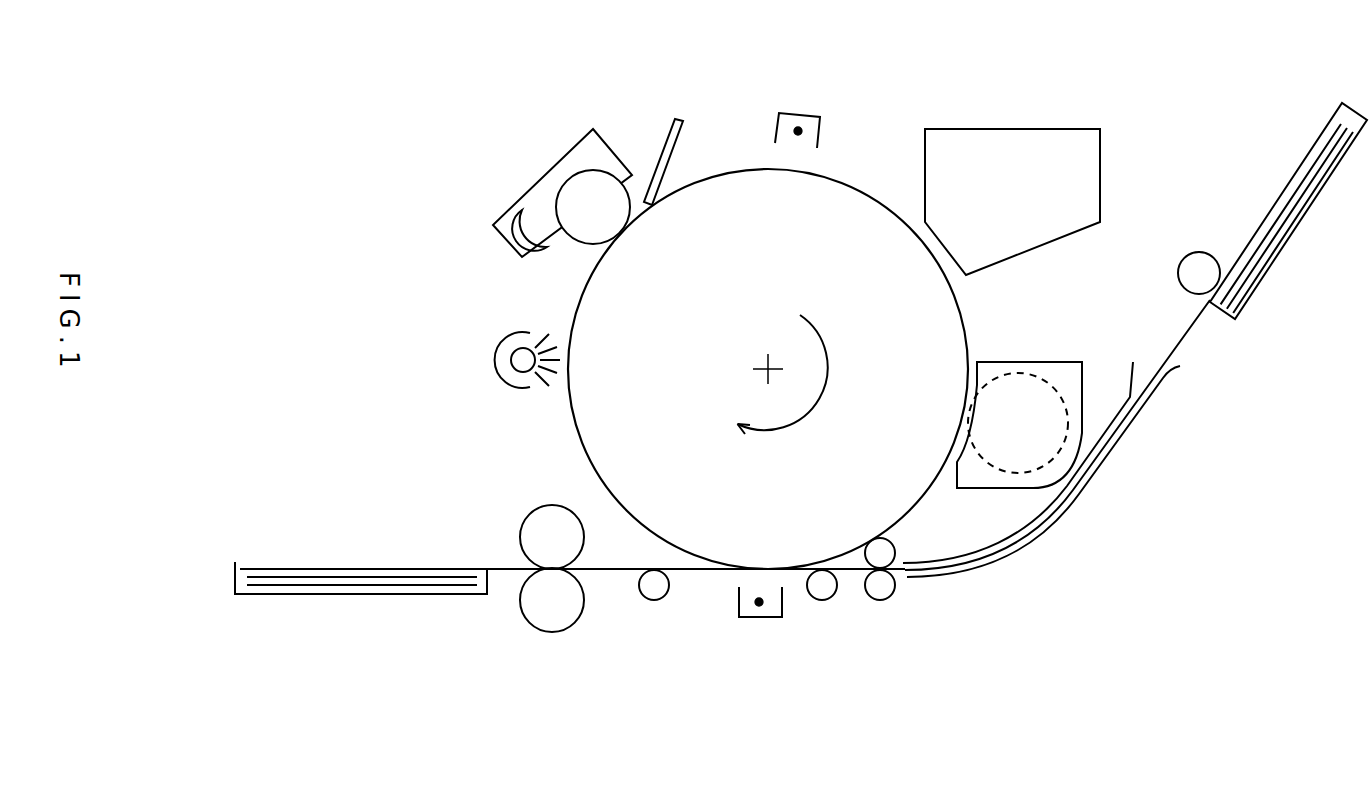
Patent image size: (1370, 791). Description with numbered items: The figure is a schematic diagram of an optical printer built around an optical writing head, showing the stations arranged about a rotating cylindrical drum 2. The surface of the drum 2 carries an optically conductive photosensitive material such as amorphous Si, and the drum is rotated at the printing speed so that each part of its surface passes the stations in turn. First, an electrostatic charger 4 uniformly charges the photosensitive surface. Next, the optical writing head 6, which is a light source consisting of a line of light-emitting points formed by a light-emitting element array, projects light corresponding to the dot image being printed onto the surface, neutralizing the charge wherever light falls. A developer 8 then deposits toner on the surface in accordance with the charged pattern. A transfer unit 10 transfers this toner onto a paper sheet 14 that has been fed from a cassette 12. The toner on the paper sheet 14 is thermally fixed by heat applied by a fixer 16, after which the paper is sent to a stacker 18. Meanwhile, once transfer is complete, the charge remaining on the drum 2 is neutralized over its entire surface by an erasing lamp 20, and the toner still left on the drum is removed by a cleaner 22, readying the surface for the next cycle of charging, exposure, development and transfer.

The cylindrical drum 2 is at (580, 443).
The electrostatic charger 4 is at (800, 113).
The optical writing head 6 is at (1015, 129).
The developer 8 is at (1033, 362).
The transfer unit 10 is at (760, 617).
The cassette 12 is at (1250, 298).
The paper sheet 14 is at (1282, 203).
The fixer 16 is at (552, 632).
The stacker 18 is at (358, 595).
The erasing lamp 20 is at (496, 356).
The cleaner 22 is at (543, 172).